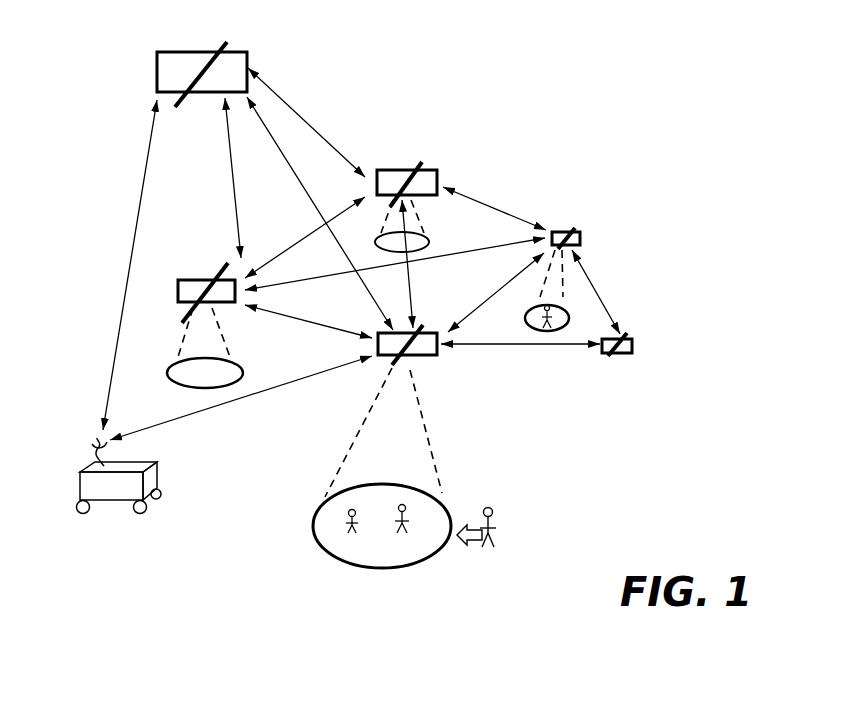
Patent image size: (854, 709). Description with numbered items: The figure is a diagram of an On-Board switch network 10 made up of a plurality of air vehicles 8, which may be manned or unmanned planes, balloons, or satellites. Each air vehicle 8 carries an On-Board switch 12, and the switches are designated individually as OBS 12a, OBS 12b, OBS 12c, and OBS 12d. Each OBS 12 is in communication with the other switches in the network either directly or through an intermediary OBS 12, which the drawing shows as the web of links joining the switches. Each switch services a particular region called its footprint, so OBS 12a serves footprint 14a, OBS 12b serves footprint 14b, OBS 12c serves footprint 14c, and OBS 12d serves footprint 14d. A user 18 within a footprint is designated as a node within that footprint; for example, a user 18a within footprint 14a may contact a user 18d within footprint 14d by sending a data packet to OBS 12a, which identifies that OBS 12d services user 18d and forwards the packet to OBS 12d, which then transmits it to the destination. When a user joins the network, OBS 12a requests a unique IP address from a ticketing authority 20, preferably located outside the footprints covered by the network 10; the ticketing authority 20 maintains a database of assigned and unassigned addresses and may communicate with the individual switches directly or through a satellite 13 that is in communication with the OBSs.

The On-Board switch network 10 is at (620, 70).
The satellite 13 is at (237, 53).
The On-Board switch 12 is at (633, 338).
The On-Board switch 12a is at (435, 355).
The On-Board switch 12b is at (205, 280).
The On-Board switch 12c is at (394, 170).
The On-Board switch 12d is at (557, 233).
The air vehicle 8 is at (435, 172).
The footprint 14a is at (440, 552).
The footprint 14b is at (232, 360).
The footprint 14c is at (428, 238).
The footprint 14d is at (552, 332).
The user 18 is at (497, 528).
The user 18a is at (348, 527).
The user 18d is at (570, 318).
The ticketing authority 20 is at (157, 478).